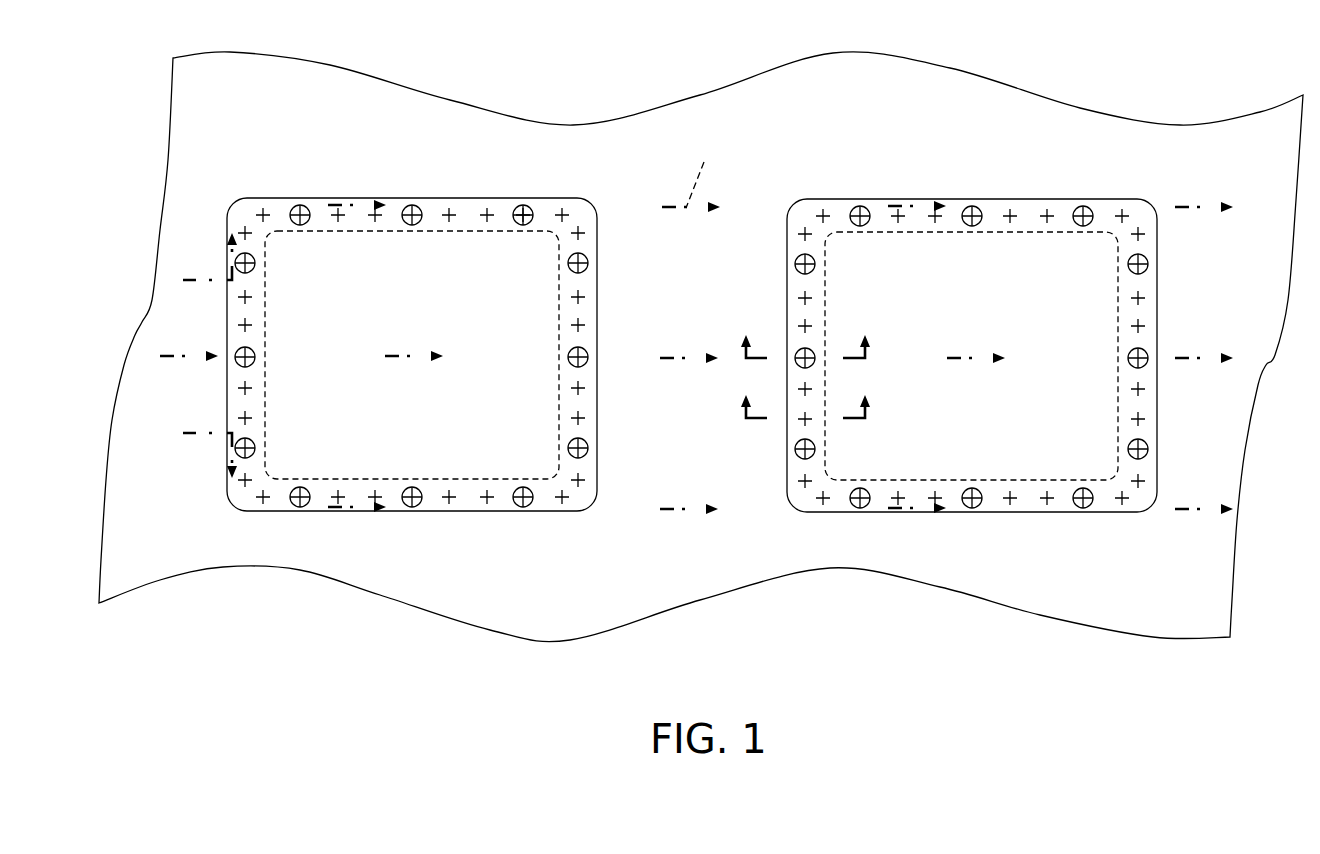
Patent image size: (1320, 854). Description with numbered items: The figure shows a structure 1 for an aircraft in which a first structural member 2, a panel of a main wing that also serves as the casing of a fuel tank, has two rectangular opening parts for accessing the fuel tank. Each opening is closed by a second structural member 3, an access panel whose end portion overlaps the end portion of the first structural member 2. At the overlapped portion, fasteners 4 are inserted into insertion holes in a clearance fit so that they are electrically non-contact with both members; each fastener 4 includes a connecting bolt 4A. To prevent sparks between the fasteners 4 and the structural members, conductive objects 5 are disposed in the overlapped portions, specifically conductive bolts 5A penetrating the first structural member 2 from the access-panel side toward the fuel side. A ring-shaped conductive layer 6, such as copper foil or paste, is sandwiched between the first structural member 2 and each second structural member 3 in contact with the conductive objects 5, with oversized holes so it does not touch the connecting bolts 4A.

The structure for an aircraft 1 is at (1162, 68).
The first structural member 2 is at (1060, 125).
The second structural member 3 is at (1098, 393).
The fasteners 4 is at (1093, 503).
The connecting bolt 4A is at (1092, 212).
The conductive objects 5 is at (1013, 505).
The conductive bolt 5A is at (1015, 212).
The conductive layer 6 is at (838, 220).